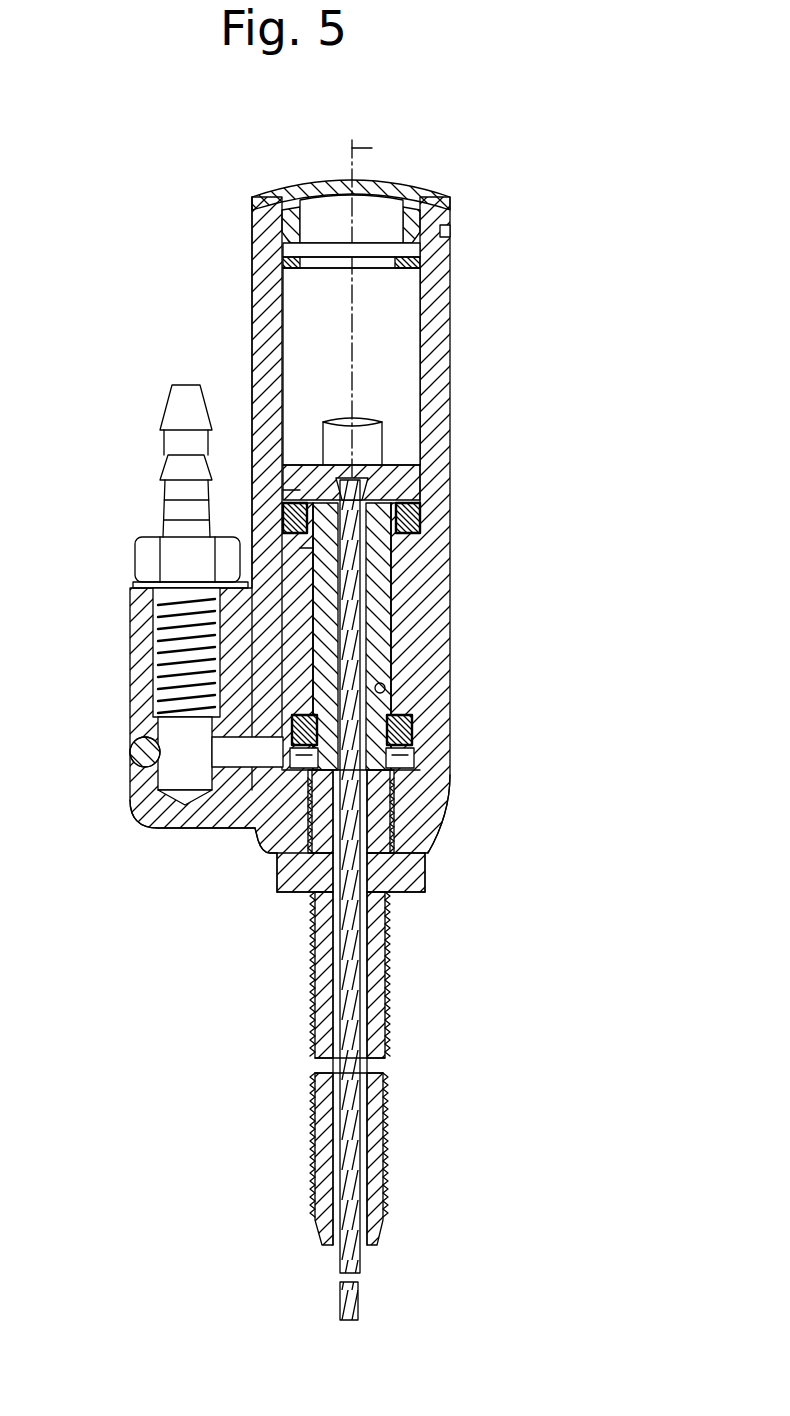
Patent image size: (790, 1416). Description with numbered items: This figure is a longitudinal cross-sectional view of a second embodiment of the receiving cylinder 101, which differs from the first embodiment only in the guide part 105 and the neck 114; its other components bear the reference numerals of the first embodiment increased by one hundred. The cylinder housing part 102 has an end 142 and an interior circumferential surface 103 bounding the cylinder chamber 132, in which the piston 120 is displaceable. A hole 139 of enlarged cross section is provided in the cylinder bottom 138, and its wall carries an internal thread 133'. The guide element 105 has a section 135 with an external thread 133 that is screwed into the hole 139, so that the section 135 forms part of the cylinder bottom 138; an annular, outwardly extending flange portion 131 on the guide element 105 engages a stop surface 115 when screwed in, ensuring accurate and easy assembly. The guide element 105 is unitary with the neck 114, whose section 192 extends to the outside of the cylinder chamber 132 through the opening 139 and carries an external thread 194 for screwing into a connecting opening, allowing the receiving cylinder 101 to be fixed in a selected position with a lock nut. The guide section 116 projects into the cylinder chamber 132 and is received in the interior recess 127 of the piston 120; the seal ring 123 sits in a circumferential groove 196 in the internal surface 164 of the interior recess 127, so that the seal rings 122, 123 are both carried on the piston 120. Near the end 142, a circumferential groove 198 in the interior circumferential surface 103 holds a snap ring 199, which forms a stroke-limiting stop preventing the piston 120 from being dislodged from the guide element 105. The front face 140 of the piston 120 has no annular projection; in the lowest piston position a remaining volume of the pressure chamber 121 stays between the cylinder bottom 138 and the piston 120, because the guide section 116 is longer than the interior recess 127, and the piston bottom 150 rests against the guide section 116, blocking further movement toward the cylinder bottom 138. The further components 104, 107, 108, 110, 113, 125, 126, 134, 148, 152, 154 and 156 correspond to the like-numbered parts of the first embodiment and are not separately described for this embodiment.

The receiving cylinder 101 is at (247, 878).
The cylinder housing part 102 is at (445, 352).
The interior circumferential surface 103 is at (422, 374).
The threaded sleeve 104 is at (365, 1180).
The guide element 105 is at (400, 665).
The threaded bore 107 is at (153, 705).
The hose fitting 108 is at (148, 558).
The cap 110 is at (308, 182).
The supply passage 113 is at (156, 775).
The neck 114 is at (383, 1116).
The stop surface 115 is at (285, 893).
The guide section 116 is at (388, 594).
The piston 120 is at (586, 636).
The pressure chamber 121 is at (440, 790).
The seal ring 122 is at (418, 518).
The seal ring 123 is at (412, 732).
The needle tip 125 is at (360, 1268).
The piston head 126 is at (340, 425).
The interior recess 127 is at (388, 690).
The flange portion 131 is at (430, 878).
The cylinder chamber 132 is at (385, 318).
The external thread 133 is at (408, 832).
The internal thread 133' is at (454, 811).
The longitudinal axis 134 is at (380, 150).
The section 135 is at (325, 870).
The cylinder bottom 138 is at (262, 850).
The hole 139 is at (420, 836).
The front face 140 is at (205, 836).
The end 142 is at (252, 300).
The piston plate 148 is at (428, 462).
The piston bottom 150 is at (425, 485).
The collar 152 is at (300, 548).
The bore 154 is at (415, 893).
The groove 156 is at (283, 495).
The internal surface 164 is at (396, 562).
The section 192 is at (385, 986).
The external thread 194 is at (385, 1030).
The circumferential groove 196 is at (414, 756).
The circumferential groove 198 is at (425, 260).
The snap ring 199 is at (288, 262).